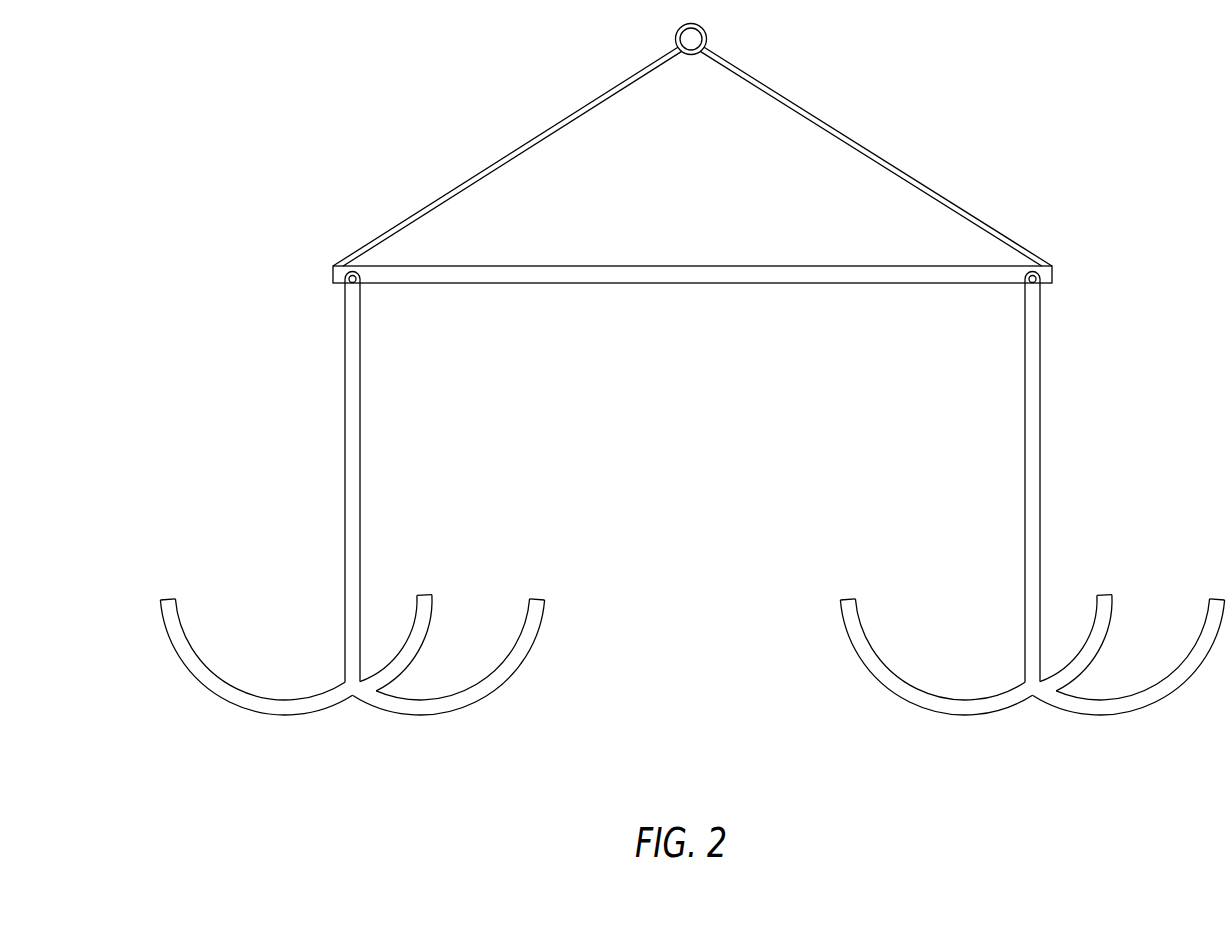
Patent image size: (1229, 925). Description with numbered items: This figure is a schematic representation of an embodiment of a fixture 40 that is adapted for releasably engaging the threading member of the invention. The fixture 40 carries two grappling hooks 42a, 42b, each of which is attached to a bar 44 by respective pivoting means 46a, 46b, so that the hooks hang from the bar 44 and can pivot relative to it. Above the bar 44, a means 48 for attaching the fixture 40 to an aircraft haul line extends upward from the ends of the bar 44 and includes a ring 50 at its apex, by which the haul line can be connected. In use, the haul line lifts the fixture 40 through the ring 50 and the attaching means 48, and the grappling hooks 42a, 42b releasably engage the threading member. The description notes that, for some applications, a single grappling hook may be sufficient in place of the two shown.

The fixture 40 is at (978, 160).
The grappling hook 42a is at (360, 475).
The grappling hook 42b is at (1025, 453).
The bar 44 is at (724, 284).
The pivoting means 46a is at (344, 286).
The pivoting means 46b is at (1018, 283).
The attaching means 48 is at (834, 124).
The ring 50 is at (706, 27).